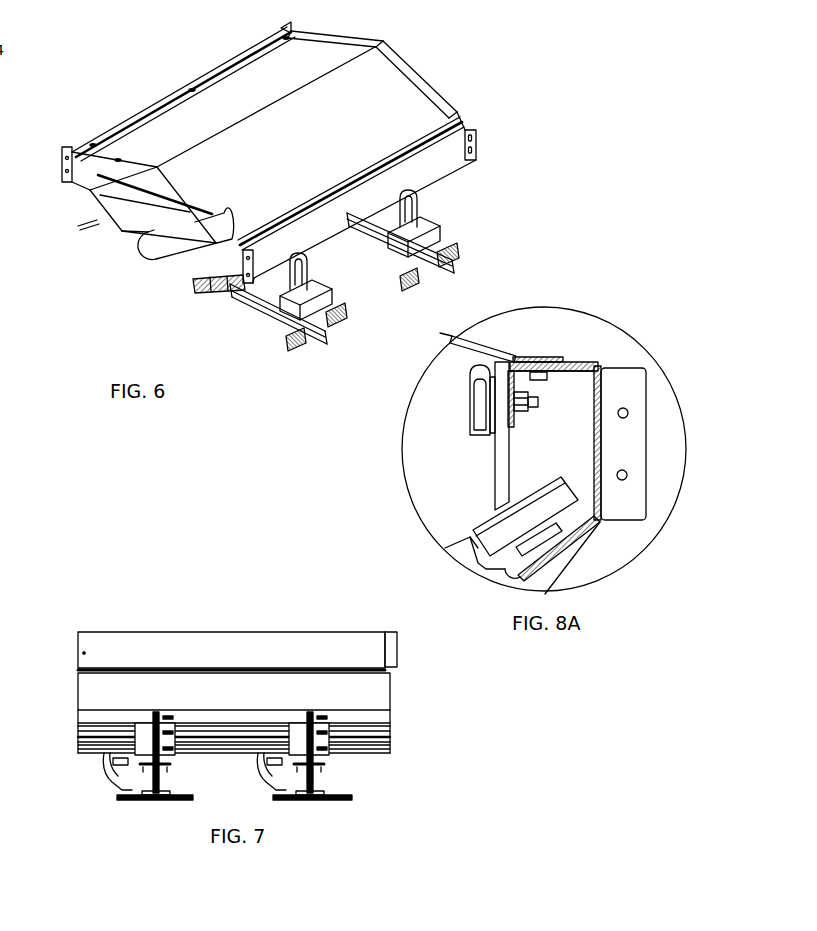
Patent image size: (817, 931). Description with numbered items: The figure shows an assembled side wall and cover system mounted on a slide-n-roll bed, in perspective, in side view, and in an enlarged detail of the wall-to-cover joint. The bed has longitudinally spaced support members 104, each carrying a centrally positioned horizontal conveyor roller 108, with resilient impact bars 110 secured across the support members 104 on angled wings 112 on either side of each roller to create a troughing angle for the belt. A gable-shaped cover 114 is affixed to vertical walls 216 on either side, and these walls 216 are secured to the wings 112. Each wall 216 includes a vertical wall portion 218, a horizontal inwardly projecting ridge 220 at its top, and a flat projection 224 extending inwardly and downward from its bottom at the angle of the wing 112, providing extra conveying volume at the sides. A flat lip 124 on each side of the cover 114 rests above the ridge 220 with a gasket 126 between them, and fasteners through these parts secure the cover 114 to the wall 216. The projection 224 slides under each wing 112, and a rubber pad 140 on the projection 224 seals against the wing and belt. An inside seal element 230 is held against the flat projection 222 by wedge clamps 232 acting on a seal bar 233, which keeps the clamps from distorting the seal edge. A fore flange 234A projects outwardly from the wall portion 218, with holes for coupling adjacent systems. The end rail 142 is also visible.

In FIG. 6, the support member 104 is at (290, 320).
In FIG. 6, the conveyor roller 108 is at (182, 258).
In FIG. 6, the impact bar 110 is at (112, 202).
In FIG. 6, the angled wing 112 is at (417, 213).
In FIG. 7, the angled wing 112 is at (227, 756).
In FIG. 6, the cover 114 is at (227, 91).
In FIG. 8A, the cover 114 is at (452, 361).
In FIG. 7, the cover 114 is at (234, 676).
In FIG. 8A, the flat lip 124 is at (573, 380).
In FIG. 8A, the gasket 126 is at (595, 339).
In FIG. 8A, the rubber pad 140 is at (533, 504).
In FIG. 6, the end rail 142 is at (435, 79).
In FIG. 8A, the end rail 142 is at (511, 313).
In FIG. 7, the end rail 142 is at (420, 643).
In FIG. 6, the vertical wall 216 is at (346, 202).
In FIG. 8A, the vertical wall portion 218 is at (595, 412).
In FIG. 8A, the inwardly projecting ridge 220 is at (623, 345).
In FIG. 8A, the flat projection 222 is at (513, 382).
In FIG. 8A, the flat projection 224 is at (586, 565).
In FIG. 8A, the inside seal element 230 is at (495, 487).
In FIG. 8A, the wedge clamp 232 is at (470, 420).
In FIG. 8A, the seal bar 233 is at (495, 452).
In FIG. 8A, the fore flange 234A is at (676, 444).